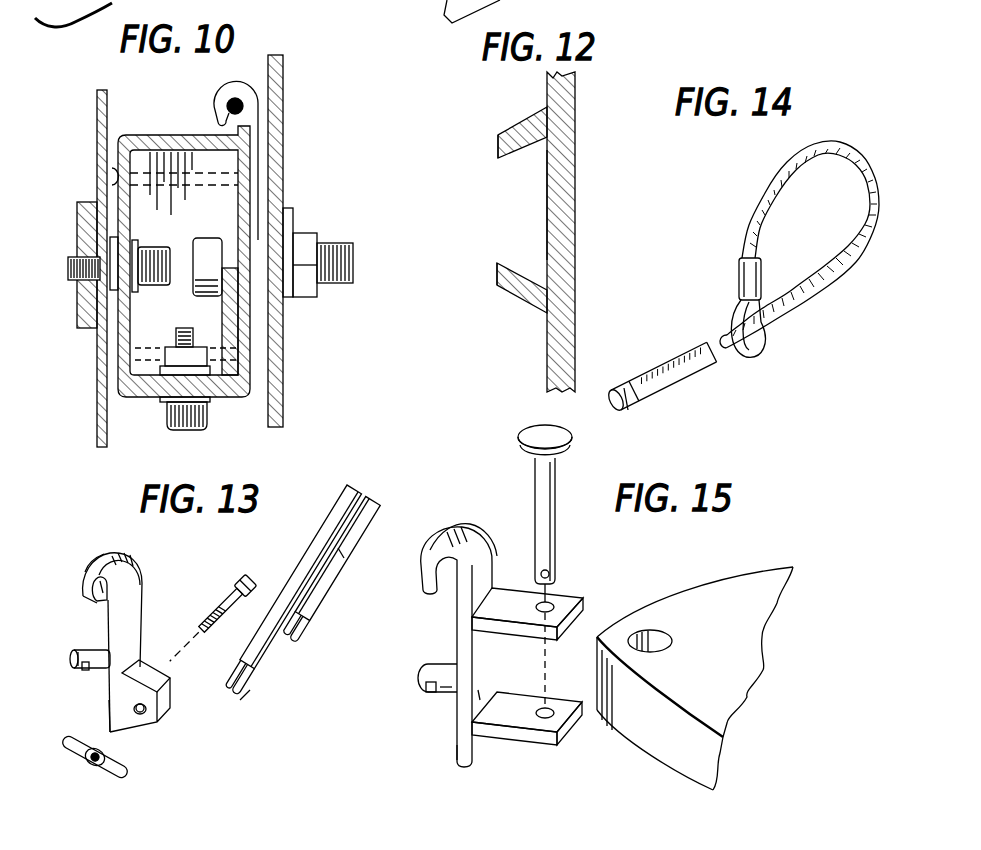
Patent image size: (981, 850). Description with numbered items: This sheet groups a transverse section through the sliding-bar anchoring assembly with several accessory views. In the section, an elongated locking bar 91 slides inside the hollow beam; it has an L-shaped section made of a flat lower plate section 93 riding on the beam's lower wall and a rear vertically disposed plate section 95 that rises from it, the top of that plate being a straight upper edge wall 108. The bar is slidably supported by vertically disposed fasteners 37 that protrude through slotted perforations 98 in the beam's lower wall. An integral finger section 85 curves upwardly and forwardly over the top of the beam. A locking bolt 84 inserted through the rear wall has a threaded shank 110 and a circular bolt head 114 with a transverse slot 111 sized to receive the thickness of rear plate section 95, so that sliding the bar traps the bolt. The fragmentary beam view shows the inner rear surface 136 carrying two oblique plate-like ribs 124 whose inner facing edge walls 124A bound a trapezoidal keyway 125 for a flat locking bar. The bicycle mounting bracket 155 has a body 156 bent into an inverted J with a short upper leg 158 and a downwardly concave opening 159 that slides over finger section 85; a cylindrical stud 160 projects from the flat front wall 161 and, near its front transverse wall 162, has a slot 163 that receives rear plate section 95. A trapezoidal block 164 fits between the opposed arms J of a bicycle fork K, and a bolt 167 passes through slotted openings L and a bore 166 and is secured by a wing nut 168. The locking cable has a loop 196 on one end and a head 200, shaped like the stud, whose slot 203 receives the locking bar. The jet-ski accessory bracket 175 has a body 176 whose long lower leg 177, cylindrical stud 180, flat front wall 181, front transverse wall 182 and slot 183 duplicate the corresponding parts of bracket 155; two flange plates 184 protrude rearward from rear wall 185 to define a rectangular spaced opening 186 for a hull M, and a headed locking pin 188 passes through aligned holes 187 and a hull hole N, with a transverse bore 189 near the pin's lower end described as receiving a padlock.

In FIG. 10, the fasteners 37 is at (186, 436).
In FIG. 10, the locking bolt 84 is at (338, 243).
In FIG. 10, the finger section 85 is at (216, 104).
In FIG. 10, the locking bar 91 is at (161, 388).
In FIG. 10, the lower plate section 93 is at (250, 396).
In FIG. 10, the rear vertically disposed plate section 95 is at (232, 335).
In FIG. 10, the slotted perforations 98 is at (205, 392).
In FIG. 10, the upper edge wall 108 is at (285, 203).
In FIG. 10, the threaded shank 110 is at (338, 285).
In FIG. 10, the slot 111 is at (232, 266).
In FIG. 10, the bolt head 114 is at (194, 298).
In FIG. 12, the ribs 124 is at (510, 133).
In FIG. 12, the inner facing edge walls 124A is at (520, 150).
In FIG. 12, the keyway 125 is at (538, 192).
In FIG. 12, the inner rear surface 136 is at (547, 349).
In FIG. 13, the bicycle mounting bracket 155 is at (111, 613).
In FIG. 13, the body 156 is at (132, 620).
In FIG. 13, the short upper leg 158 is at (84, 593).
In FIG. 13, the downwardly concave opening 159 is at (101, 603).
In FIG. 13, the cylindrical stud 160 is at (70, 651).
In FIG. 13, the flat front wall 161 is at (108, 697).
In FIG. 13, the front transverse wall 162 is at (72, 669).
In FIG. 13, the slot 163 is at (85, 671).
In FIG. 13, the block 164 is at (160, 705).
In FIG. 13, the bore 166 is at (143, 716).
In FIG. 13, the bolt 167 is at (233, 588).
In FIG. 13, the wing nut 168 is at (83, 752).
In FIG. 14, the accessory bracket 175 is at (713, 307).
In FIG. 15, the accessory bracket 175 is at (577, 494).
In FIG. 15, the body 176 is at (427, 645).
In FIG. 15, the long lower leg 177 is at (456, 632).
In FIG. 15, the cylindrical stud 180 is at (418, 701).
In FIG. 15, the flat front wall 181 is at (456, 750).
In FIG. 15, the front transverse wall 182 is at (415, 688).
In FIG. 15, the slot 183 is at (444, 698).
In FIG. 15, the flange plates 184 is at (519, 633).
In FIG. 15, the rear wall 185 is at (481, 691).
In FIG. 15, the rectangular spaced opening 186 is at (584, 628).
In FIG. 15, the hole 187 is at (556, 600).
In FIG. 15, the headed locking pin 188 is at (538, 490).
In FIG. 15, the pin hole 189 is at (549, 571).
In FIG. 14, the loop 196 is at (761, 346).
In FIG. 14, the head 200 is at (634, 384).
In FIG. 14, the slot 203 is at (636, 405).
In FIG. 13, the opposed arms J is at (340, 554).
In FIG. 13, the bicycle fork K is at (381, 477).
In FIG. 13, the slotted openings L is at (297, 628).
In FIG. 15, the hull M is at (715, 600).
In FIG. 15, the hole N is at (657, 632).